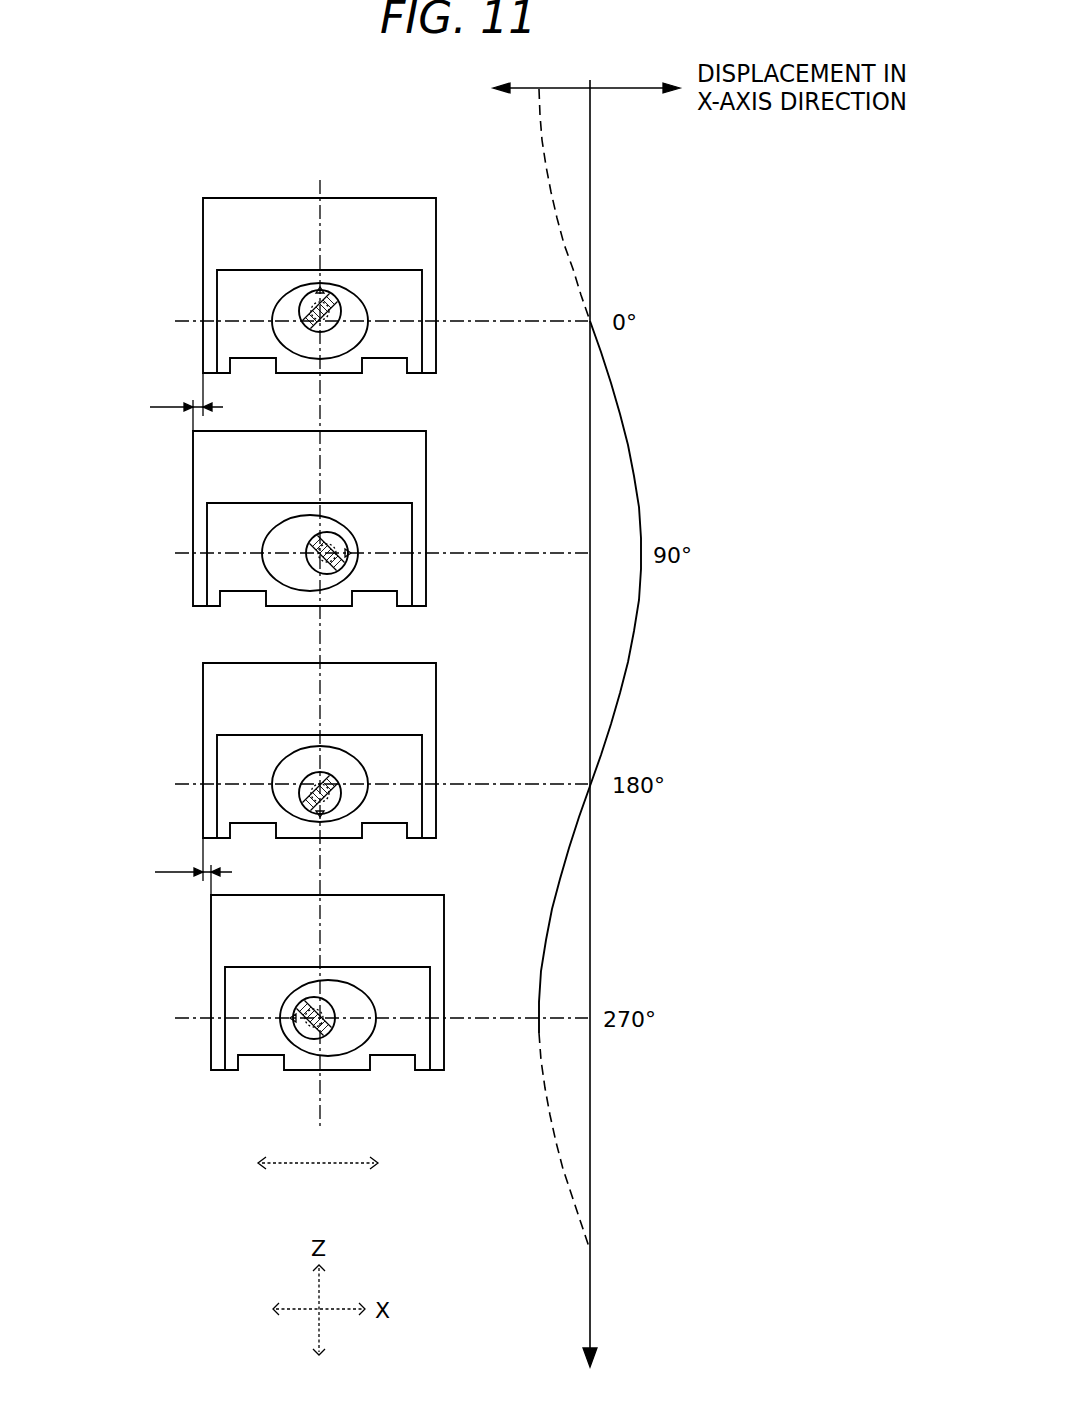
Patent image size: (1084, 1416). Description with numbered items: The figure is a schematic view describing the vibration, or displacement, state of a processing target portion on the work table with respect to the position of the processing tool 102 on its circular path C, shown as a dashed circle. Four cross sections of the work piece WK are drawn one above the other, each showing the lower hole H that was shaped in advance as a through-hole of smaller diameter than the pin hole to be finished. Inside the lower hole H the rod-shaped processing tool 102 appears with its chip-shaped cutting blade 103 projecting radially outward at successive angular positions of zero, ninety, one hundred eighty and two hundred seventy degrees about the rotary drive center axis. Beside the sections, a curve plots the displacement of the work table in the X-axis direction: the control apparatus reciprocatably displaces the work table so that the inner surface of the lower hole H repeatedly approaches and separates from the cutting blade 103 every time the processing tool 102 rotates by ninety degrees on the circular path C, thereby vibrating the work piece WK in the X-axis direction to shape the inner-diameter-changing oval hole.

The processing tool 102 is at (324, 306).
The cutting blade 103 is at (318, 288).
The work piece WK is at (201, 195).
The lower hole H is at (287, 338).
The circular path C is at (330, 306).